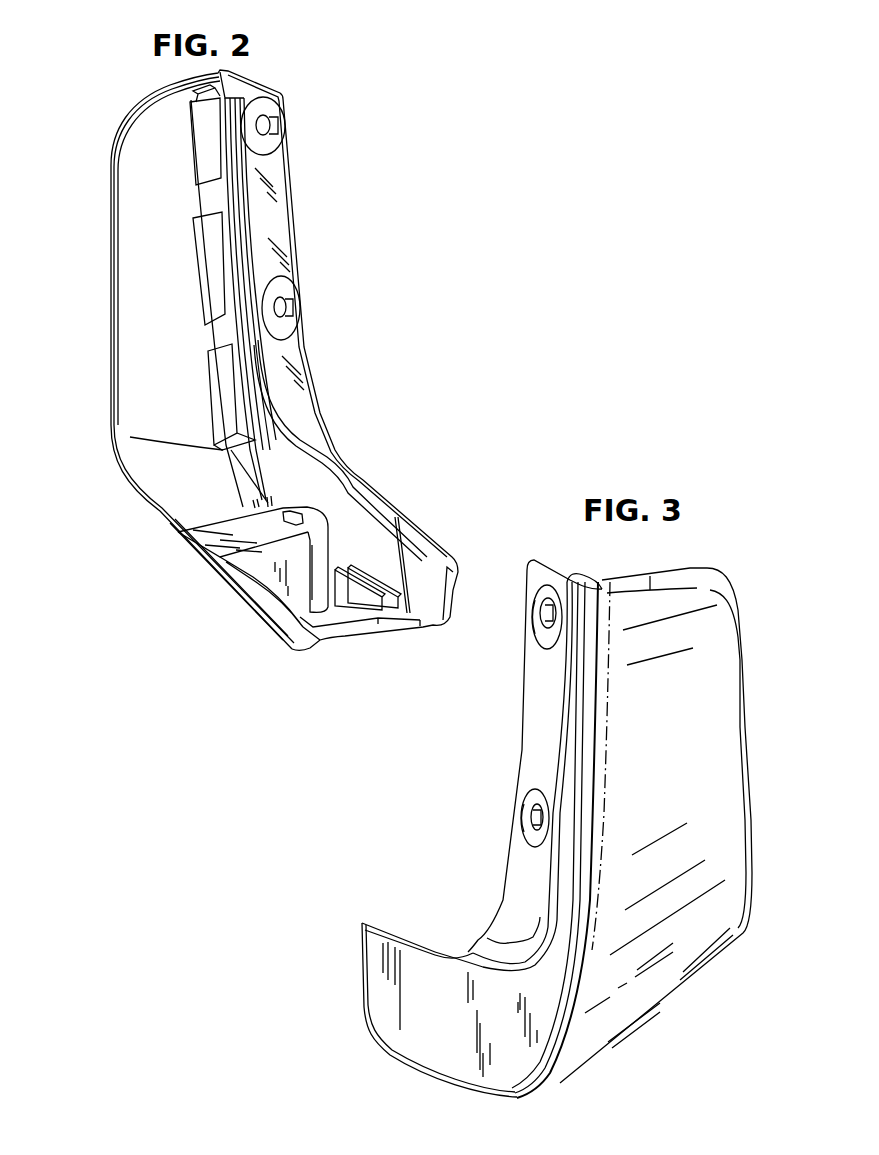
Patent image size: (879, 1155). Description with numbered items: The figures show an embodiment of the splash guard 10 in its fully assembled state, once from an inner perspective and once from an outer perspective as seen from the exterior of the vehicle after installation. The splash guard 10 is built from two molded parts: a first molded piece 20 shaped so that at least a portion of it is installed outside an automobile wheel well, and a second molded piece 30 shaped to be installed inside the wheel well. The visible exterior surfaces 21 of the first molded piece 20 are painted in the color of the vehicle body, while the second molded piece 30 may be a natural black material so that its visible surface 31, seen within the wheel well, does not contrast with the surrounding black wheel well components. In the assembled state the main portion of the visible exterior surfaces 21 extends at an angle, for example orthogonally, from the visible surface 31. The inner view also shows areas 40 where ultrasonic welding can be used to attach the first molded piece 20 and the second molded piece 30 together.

In FIG. 2, the splash guard 10 is at (372, 283).
In FIG. 3, the splash guard 10 is at (488, 809).
In FIG. 2, the first molded piece 20 is at (88, 382).
In FIG. 3, the first molded piece 20 is at (766, 687).
In FIG. 3, the visible exterior surfaces 21 is at (697, 884).
In FIG. 2, the second molded piece 30 is at (380, 478).
In FIG. 3, the second molded piece 30 is at (340, 984).
In FIG. 3, the visible surface 31 is at (429, 1051).
In FIG. 2, the areas 40 is at (200, 125).